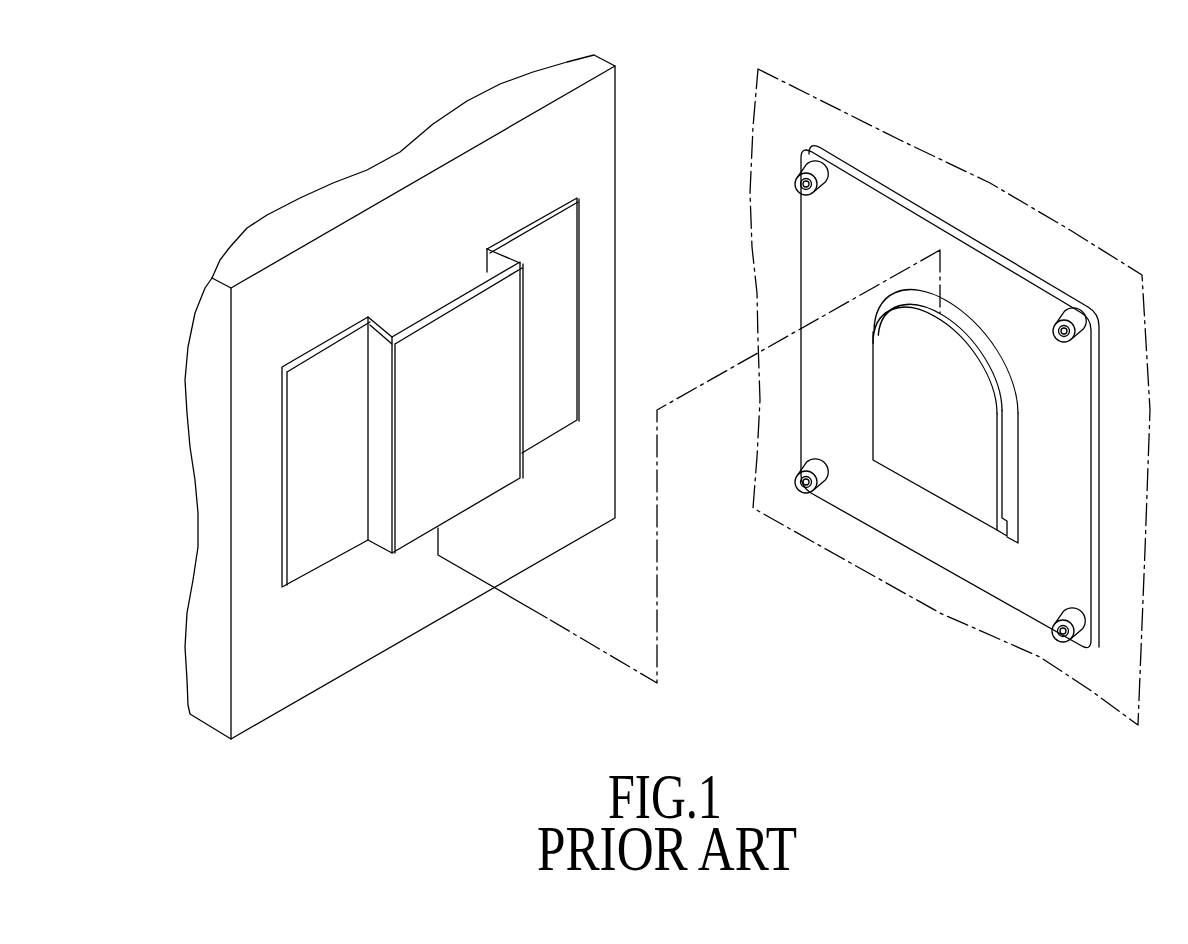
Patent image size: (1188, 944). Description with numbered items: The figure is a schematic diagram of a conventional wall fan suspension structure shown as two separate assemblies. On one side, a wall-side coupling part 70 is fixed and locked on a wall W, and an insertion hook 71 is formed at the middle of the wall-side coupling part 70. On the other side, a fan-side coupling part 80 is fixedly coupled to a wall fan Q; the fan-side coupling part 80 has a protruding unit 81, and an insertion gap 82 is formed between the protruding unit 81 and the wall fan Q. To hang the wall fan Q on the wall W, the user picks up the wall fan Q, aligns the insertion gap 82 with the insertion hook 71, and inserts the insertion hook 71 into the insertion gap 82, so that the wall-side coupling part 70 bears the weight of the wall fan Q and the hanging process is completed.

The wall fan Q is at (585, 145).
The wall W is at (958, 188).
The wall-side coupling part 70 is at (1015, 293).
The insertion hook 71 is at (925, 473).
The fan-side coupling part 80 is at (565, 277).
The protruding unit 81 is at (426, 503).
The insertion gap 82 is at (414, 387).